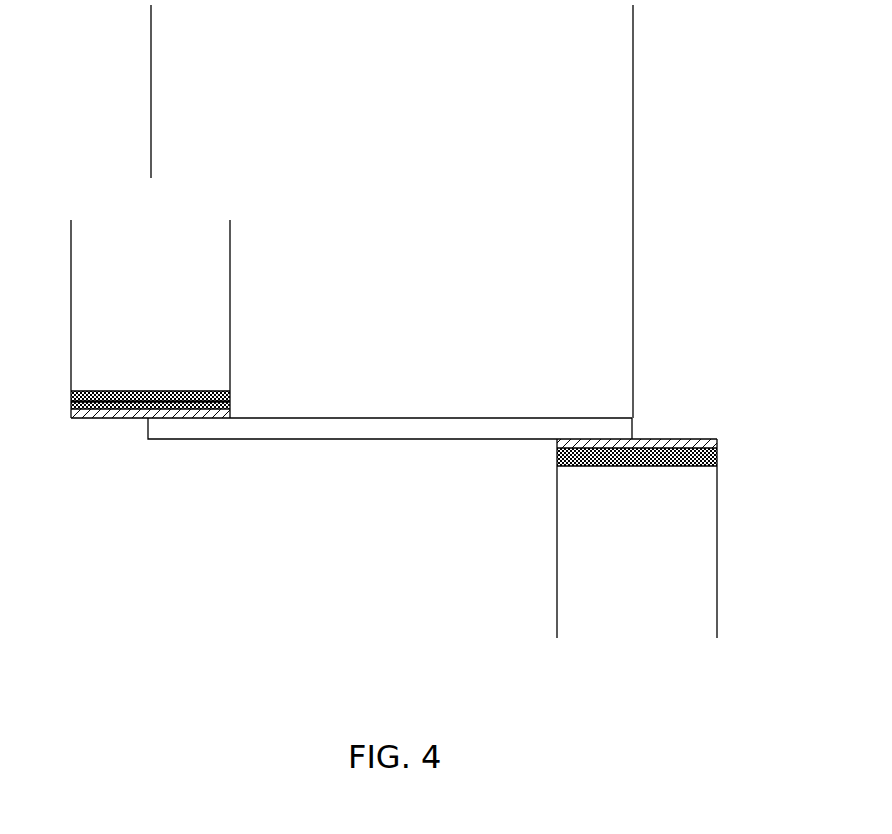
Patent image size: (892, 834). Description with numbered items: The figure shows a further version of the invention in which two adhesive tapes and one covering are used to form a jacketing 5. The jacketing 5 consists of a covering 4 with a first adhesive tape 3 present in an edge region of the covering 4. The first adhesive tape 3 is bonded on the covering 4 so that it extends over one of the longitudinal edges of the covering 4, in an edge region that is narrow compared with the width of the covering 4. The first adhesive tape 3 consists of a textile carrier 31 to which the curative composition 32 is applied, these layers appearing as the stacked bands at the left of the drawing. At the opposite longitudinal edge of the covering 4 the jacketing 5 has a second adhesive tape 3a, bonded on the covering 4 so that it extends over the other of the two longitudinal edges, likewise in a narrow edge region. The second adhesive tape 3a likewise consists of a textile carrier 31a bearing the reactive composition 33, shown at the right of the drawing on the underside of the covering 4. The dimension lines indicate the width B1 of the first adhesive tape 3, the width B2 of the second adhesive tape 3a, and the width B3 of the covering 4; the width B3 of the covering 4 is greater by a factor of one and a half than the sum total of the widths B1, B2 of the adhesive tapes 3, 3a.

The first adhesive tape 3 is at (140, 403).
The second adhesive tape 3a is at (650, 495).
The covering 4 is at (365, 429).
The jacketing 5 is at (415, 343).
The textile carrier 31 is at (127, 390).
The textile carrier 31a is at (620, 457).
The curative composition 32 is at (82, 415).
The reactive composition 33 is at (703, 440).
The width of the first adhesive tape B1 is at (72, 228).
The width of the second adhesive tape B2 is at (558, 632).
The width of the covering B3 is at (632, 19).